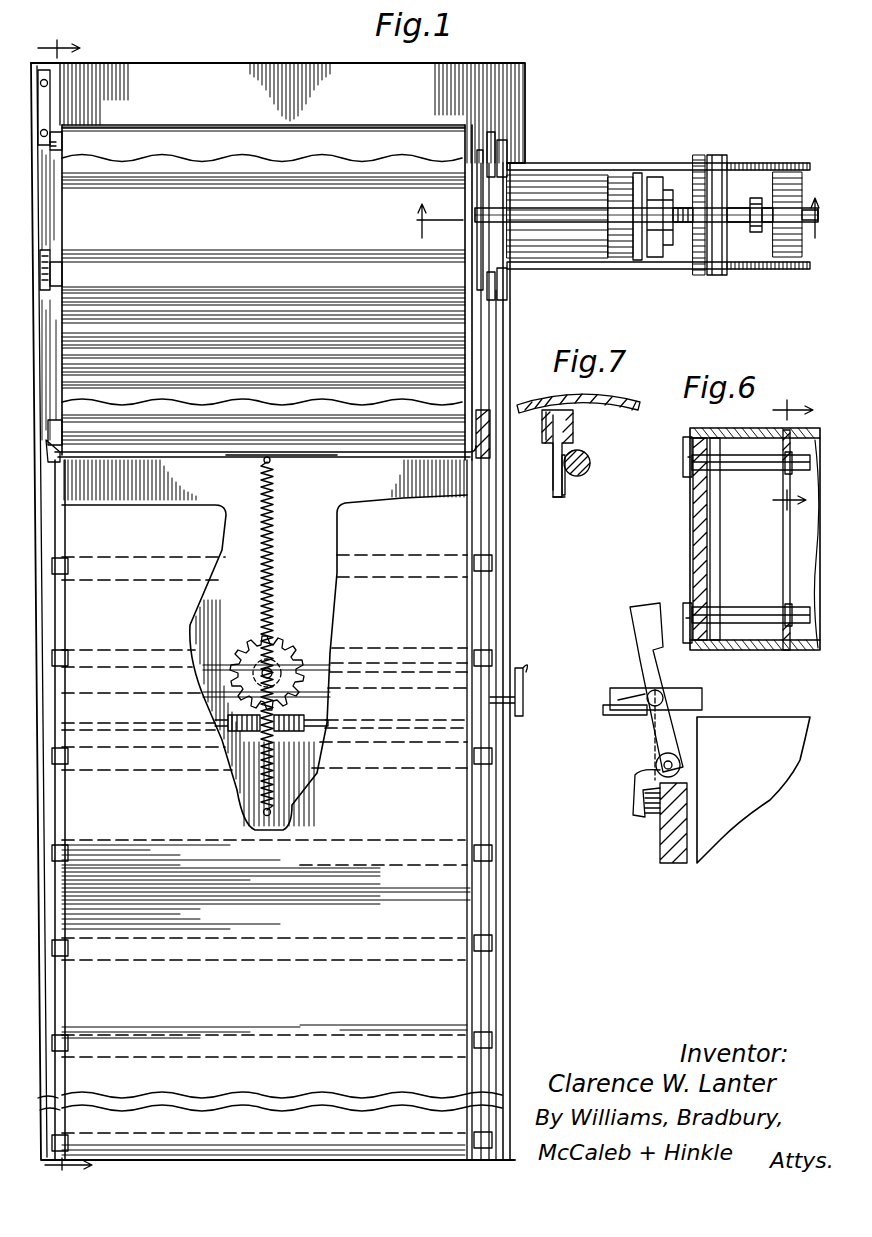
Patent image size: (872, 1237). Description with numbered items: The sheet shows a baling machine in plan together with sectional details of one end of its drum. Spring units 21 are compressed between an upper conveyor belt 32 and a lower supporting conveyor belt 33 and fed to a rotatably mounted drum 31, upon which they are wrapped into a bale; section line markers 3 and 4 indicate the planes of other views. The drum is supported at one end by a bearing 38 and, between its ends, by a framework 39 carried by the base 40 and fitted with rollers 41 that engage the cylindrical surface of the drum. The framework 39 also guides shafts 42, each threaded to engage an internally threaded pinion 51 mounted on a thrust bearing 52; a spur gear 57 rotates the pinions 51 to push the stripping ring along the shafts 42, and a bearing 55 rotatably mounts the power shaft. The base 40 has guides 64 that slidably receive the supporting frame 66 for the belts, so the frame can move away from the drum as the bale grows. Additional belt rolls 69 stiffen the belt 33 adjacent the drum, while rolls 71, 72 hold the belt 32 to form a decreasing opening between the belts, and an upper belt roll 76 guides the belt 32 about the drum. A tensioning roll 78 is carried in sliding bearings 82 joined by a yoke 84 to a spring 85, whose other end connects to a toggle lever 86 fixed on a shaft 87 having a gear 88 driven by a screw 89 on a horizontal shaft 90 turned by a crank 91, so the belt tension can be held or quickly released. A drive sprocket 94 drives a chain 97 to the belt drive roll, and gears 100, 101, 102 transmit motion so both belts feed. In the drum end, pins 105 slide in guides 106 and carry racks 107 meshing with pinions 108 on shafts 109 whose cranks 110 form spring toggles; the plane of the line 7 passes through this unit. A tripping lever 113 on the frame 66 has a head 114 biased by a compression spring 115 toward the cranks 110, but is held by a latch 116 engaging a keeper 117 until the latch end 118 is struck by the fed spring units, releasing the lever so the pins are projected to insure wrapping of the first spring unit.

In FIG. 1, the section line 3- 3 is at (65, 603).
In FIG. 1, the section line 4- 4 is at (602, 227).
In FIG. 6, the line 7— 7 is at (793, 456).
In FIG. 1, the spring unit 21 is at (737, 810).
In FIG. 1, the drum 31 is at (638, 175).
In FIG. 7, the drum 31 is at (605, 400).
In FIG. 6, the drum 31 is at (715, 430).
In FIG. 1, the conveyor belt 32 is at (180, 128).
In FIG. 1, the conveyor belt 33 is at (455, 612).
In FIG. 1, the bearing 38 is at (618, 262).
In FIG. 1, the framework 39 is at (497, 148).
In FIG. 1, the base 40 is at (150, 52).
In FIG. 1, the rollers 41 is at (500, 165).
In FIG. 1, the shafts 42 is at (590, 180).
In FIG. 1, the pinion 51 is at (700, 175).
In FIG. 1, the thrust bearing 52 is at (718, 275).
In FIG. 1, the bearing 55 is at (790, 172).
In FIG. 1, the spur gear 57 is at (712, 160).
In FIG. 1, the guides 64 is at (55, 600).
In FIG. 1, the supporting frame 66 is at (70, 296).
In FIG. 1, the conveyor belt rolls 69 is at (492, 565).
In FIG. 1, the conveyor belt rolls 71 is at (210, 350).
In FIG. 1, the conveyor belt roll 72 is at (135, 262).
In FIG. 1, the upper conveyor belt roll 76 is at (60, 144).
In FIG. 1, the tensioning roll 78 is at (197, 452).
In FIG. 1, the bearings 82 is at (90, 440).
In FIG. 1, the yoke 84 is at (352, 455).
In FIG. 1, the spring 85 is at (275, 500).
In FIG. 1, the toggle lever 86 is at (280, 808).
In FIG. 1, the shaft 87 is at (262, 675).
In FIG. 1, the gear 88 is at (288, 660).
In FIG. 1, the screw 89 is at (280, 730).
In FIG. 1, the horizontal shaft 90 is at (318, 735).
In FIG. 1, the crank 91 is at (525, 700).
In FIG. 1, the sprocket wheel 94 is at (658, 178).
In FIG. 1, the drive chain 97 is at (638, 262).
In FIG. 1, the gear 100 is at (50, 258).
In FIG. 1, the gear 101 is at (52, 266).
In FIG. 1, the gear 102 is at (55, 286).
In FIG. 7, the pins 105 is at (570, 418).
In FIG. 6, the pins 105 is at (770, 478).
In FIG. 7, the guides 106 is at (547, 432).
In FIG. 6, the guides 106 is at (748, 645).
In FIG. 7, the racks 107 is at (568, 492).
In FIG. 7, the pinions 108 is at (588, 468).
In FIG. 7, the shafts 109 is at (590, 455).
In FIG. 6, the shafts 109 is at (720, 470).
In FIG. 1, the cranks 110 is at (240, 532).
In FIG. 6, the cranks 110 is at (680, 470).
In FIG. 1, the tripping lever 113 is at (645, 655).
In FIG. 1, the head 114 is at (640, 618).
In FIG. 1, the compression spring 115 is at (640, 790).
In FIG. 1, the latch 116 is at (635, 715).
In FIG. 1, the keeper 117 is at (620, 698).
In FIG. 1, the end 118 is at (700, 700).